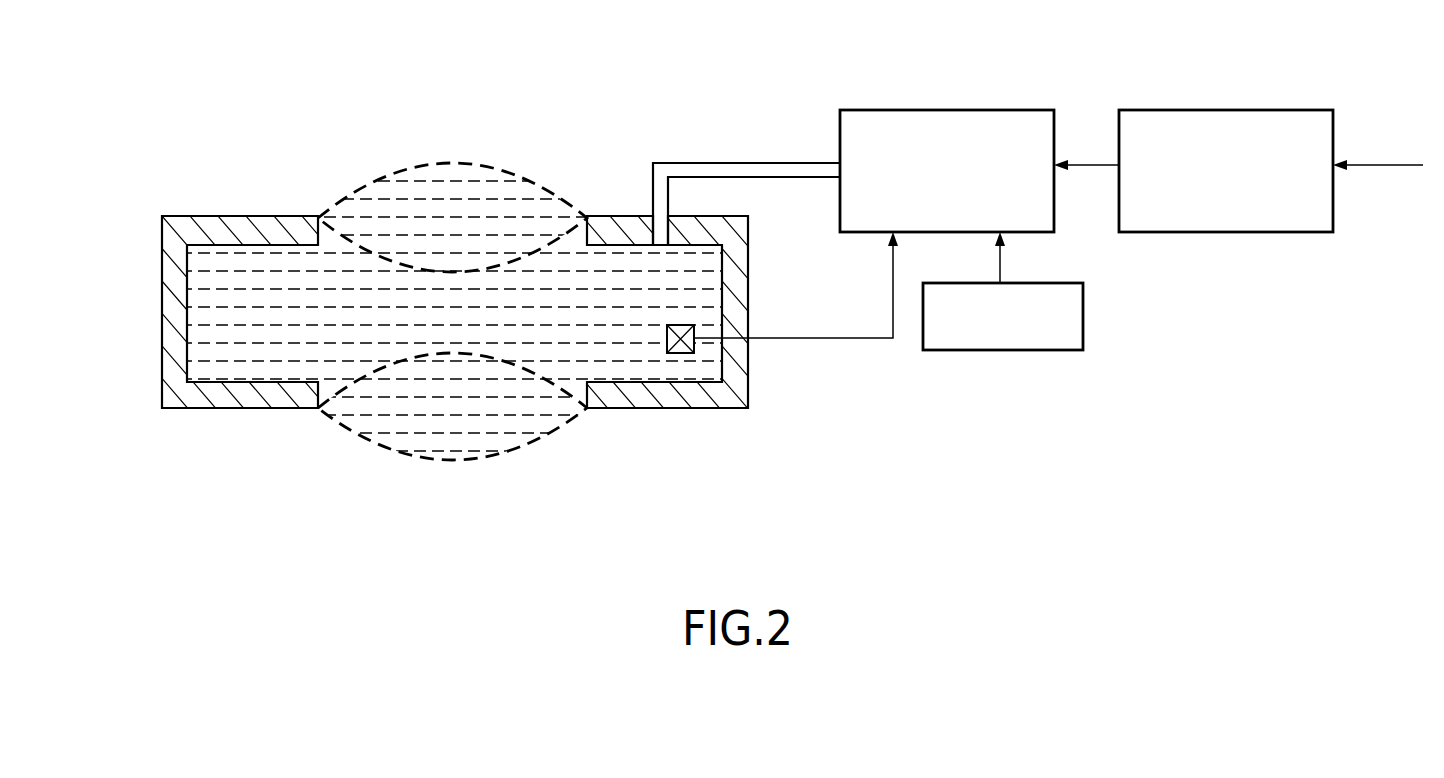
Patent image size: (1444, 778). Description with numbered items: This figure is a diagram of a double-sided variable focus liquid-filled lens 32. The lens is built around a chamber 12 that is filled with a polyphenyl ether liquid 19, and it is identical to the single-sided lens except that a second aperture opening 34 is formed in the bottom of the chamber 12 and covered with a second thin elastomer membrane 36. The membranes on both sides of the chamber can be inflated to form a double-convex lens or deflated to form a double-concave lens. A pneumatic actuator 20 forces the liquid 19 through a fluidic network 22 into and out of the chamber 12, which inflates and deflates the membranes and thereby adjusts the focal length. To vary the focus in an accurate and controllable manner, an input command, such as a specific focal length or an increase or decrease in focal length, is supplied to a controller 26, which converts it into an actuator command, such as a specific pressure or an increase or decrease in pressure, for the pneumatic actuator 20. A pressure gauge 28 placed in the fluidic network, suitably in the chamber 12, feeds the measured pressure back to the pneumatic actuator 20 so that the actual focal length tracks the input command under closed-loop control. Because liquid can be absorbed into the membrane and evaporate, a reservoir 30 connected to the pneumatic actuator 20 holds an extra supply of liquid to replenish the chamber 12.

The chamber 12 is at (162, 300).
The polyphenyl ether (PPE) liquid 19 is at (455, 320).
The pneumatic actuator 20 is at (840, 155).
The fluidic network 22 is at (745, 163).
The controller 26 is at (1186, 110).
The pressure gauge 28 is at (695, 327).
The reservoir 30 is at (1083, 322).
The double-sided variable focus liquid-filled lens 32 is at (224, 140).
The second aperture opening 34 is at (455, 413).
The second thin elastomer membrane 36 is at (513, 445).